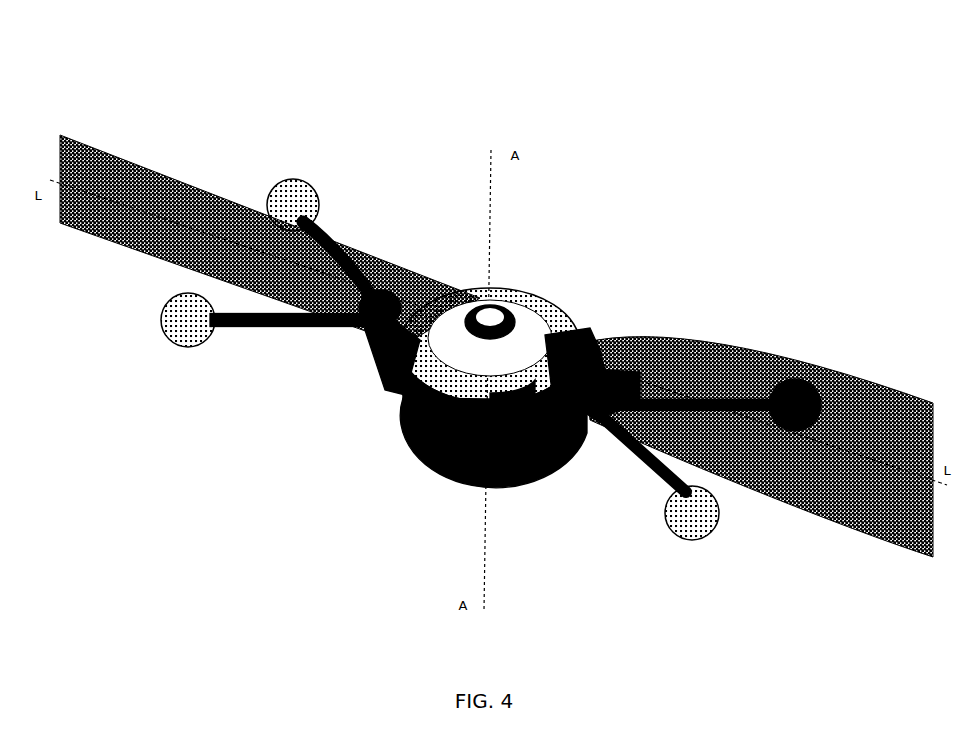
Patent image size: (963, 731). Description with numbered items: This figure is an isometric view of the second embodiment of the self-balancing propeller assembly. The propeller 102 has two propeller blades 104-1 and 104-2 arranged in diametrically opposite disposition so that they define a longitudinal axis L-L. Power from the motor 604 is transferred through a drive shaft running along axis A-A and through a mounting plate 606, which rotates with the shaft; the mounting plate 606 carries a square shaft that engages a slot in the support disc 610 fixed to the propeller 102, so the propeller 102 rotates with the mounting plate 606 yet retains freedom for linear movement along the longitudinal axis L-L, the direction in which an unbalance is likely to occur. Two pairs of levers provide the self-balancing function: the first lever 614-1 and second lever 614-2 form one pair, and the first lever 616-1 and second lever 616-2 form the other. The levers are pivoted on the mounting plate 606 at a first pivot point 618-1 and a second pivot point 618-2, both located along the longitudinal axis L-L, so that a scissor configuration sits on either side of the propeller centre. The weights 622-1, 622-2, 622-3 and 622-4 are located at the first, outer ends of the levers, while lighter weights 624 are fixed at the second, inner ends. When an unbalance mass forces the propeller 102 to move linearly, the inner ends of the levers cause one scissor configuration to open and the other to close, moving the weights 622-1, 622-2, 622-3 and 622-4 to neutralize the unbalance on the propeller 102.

The propeller 102 is at (496, 326).
The propeller blade 104-1 is at (157, 190).
The propeller blade 104-2 is at (662, 345).
The motor 604 is at (552, 480).
The mounting plate 606 is at (455, 432).
The support disc 610 is at (403, 443).
The first lever 614-1 is at (325, 333).
The second lever 614-2 is at (748, 398).
The first lever 616-1 is at (337, 270).
The second lever 616-2 is at (647, 453).
The first pivot point 618-1 is at (393, 270).
The second pivot point 618-2 is at (602, 340).
The weight 622-1 is at (168, 347).
The weight 622-2 is at (293, 178).
The weight 622-3 is at (727, 527).
The weight 622-4 is at (813, 368).
The weights 624 is at (535, 432).